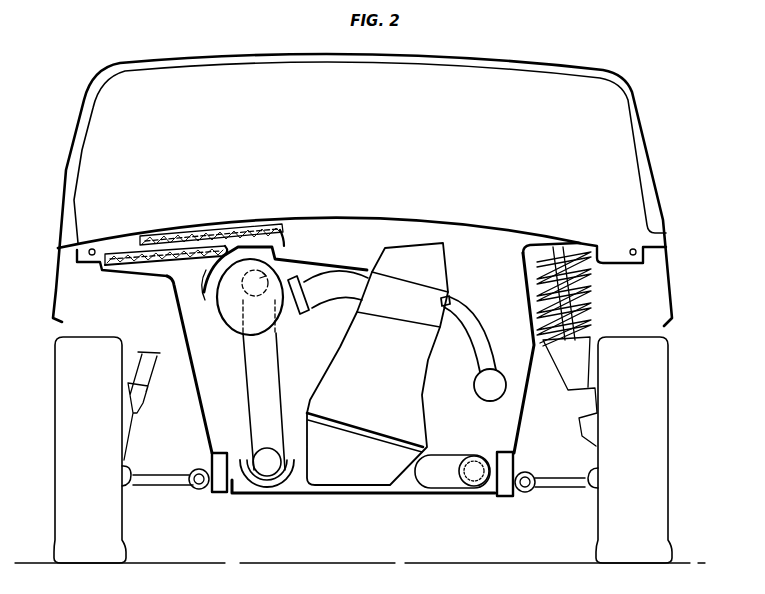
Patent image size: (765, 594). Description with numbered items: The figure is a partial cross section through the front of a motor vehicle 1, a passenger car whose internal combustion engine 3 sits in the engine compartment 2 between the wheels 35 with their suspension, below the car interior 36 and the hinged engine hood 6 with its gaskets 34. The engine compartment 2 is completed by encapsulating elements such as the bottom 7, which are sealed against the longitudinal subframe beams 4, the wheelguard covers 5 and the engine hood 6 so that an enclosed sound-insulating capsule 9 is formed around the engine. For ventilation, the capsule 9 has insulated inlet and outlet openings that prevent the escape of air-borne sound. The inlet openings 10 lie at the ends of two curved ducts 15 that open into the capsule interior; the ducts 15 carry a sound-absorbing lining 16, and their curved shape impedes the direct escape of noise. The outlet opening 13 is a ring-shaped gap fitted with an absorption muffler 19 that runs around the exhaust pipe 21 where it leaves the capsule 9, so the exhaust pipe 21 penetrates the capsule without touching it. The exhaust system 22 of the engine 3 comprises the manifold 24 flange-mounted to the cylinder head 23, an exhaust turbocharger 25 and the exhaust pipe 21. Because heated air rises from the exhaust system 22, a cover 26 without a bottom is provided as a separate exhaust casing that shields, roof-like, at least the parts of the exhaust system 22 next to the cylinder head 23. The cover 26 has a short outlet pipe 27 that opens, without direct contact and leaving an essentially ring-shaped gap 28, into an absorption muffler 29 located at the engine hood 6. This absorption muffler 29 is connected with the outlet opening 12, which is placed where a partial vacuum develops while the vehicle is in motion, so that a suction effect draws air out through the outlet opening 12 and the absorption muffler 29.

The motor vehicle 1 is at (68, 166).
The engine compartment 2 is at (474, 292).
The internal combustion engine 3 is at (368, 385).
The longitudinal subframe beams 4 is at (218, 494).
The wheelguard covers 5 is at (195, 400).
The engine hood 6 is at (422, 222).
The bottom 7 is at (337, 496).
The sound-insulating capsule 9 is at (167, 314).
The inlet openings 10 is at (422, 472).
The outlet opening 12 is at (121, 246).
The outlet opening 13 is at (262, 478).
The curved ducts 15 is at (443, 485).
The sound-absorbing lining 16 is at (475, 487).
The absorption muffler 19 is at (275, 480).
The exhaust pipe 21 is at (251, 401).
The exhaust system 22 is at (321, 304).
The cylinder head 23 is at (410, 292).
The manifold 24 is at (341, 292).
The exhaust turbocharger 25 is at (222, 313).
The cover 26 is at (206, 292).
The outlet pipe 27 is at (258, 246).
The ring-shaped gap 28 is at (232, 246).
The absorption muffler 29 is at (178, 232).
The gaskets 34 is at (633, 248).
The wheels 35 is at (75, 383).
The car interior 36 is at (551, 152).